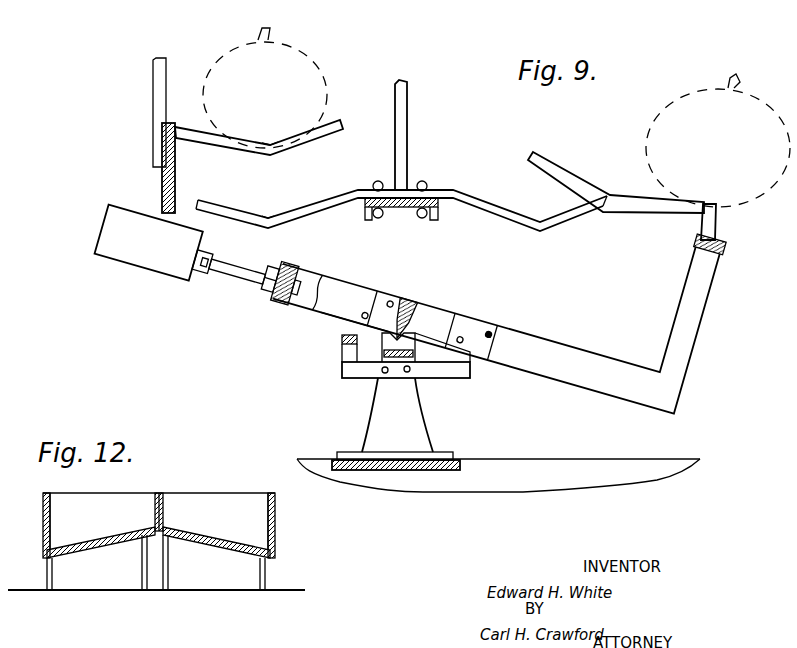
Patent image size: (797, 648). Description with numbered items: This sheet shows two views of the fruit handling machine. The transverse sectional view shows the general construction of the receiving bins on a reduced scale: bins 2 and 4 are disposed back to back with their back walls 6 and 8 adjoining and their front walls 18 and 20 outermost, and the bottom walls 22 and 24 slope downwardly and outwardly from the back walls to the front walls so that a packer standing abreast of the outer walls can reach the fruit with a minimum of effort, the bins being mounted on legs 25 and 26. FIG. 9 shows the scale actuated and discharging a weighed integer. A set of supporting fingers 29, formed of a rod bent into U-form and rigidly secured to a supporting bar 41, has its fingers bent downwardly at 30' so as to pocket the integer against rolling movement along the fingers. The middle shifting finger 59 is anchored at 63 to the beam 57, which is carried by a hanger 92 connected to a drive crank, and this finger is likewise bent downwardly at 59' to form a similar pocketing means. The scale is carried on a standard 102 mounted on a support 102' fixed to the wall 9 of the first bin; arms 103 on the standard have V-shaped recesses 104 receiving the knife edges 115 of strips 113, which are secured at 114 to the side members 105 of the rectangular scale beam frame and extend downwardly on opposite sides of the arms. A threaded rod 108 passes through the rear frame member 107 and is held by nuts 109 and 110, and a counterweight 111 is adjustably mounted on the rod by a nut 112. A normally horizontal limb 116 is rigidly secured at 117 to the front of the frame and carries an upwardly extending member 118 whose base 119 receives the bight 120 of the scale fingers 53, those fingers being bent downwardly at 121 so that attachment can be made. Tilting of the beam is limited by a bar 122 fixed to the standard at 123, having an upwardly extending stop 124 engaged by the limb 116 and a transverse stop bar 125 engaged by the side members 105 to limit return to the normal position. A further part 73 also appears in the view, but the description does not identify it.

In FIG. 12, the receiving bin 2 is at (72, 510).
In FIG. 12, the receiving bin 4 is at (243, 508).
In FIG. 12, the back wall 6 is at (155, 500).
In FIG. 12, the back wall 8 is at (165, 500).
In FIG. 9, the abutting end wall 9 is at (577, 467).
In FIG. 12, the front wall 18 is at (43, 522).
In FIG. 12, the front wall 20 is at (275, 531).
In FIG. 12, the bottom wall 22 is at (100, 548).
In FIG. 12, the bottom wall 24 is at (222, 548).
In FIG. 12, the legs 25 is at (142, 575).
In FIG. 12, the legs 26 is at (262, 578).
In FIG. 9, the set of supporting fingers 29 is at (196, 141).
In FIG. 9, the downward bend 30' is at (276, 160).
In FIG. 9, the supporting bar 41 is at (162, 187).
In FIG. 9, the scale fingers 53 is at (718, 208).
In FIG. 9, the beam 57 is at (402, 210).
In FIG. 9, the middle shifting finger 59 is at (401, 208).
In FIG. 9, the pocketing portion 59' is at (277, 233).
In FIG. 9, the anchorage of shifting fingers 63 is at (425, 183).
In FIG. 9, the arm 73 is at (568, 218).
In FIG. 9, the hanger 92 is at (402, 118).
In FIG. 9, the standard 102 is at (419, 415).
In FIG. 9, the support 102' is at (425, 449).
In FIG. 9, the arms 103 is at (357, 365).
In FIG. 9, the V-shaped recesses 104 is at (382, 352).
In FIG. 9, the side members 105 is at (322, 282).
In FIG. 9, the rear member 107 is at (290, 297).
In FIG. 9, the threaded rod 108 is at (240, 272).
In FIG. 9, the nut 109 is at (278, 288).
In FIG. 9, the nut 110 is at (291, 272).
In FIG. 9, the counterweight 111 is at (163, 262).
In FIG. 9, the nut 112 is at (196, 270).
In FIG. 9, the strips 113 is at (413, 310).
In FIG. 9, the securing point of strips 114 is at (362, 323).
In FIG. 9, the knife edges 115 is at (386, 335).
In FIG. 9, the normally horizontal limb 116 is at (595, 345).
In FIG. 9, the securing point of limb 117 is at (490, 335).
In FIG. 9, the upwardly extending member 118 is at (698, 334).
In FIG. 9, the base 119 is at (726, 248).
In FIG. 9, the bight 120 is at (700, 236).
In FIG. 9, the downward bend of scale fingers 121 is at (703, 226).
In FIG. 9, the bar 122 is at (373, 380).
In FIG. 9, the fixing point of bar 123 is at (383, 383).
In FIG. 9, the upwardly extending stop 124 is at (470, 362).
In FIG. 9, the transverse stop bar 125 is at (342, 338).